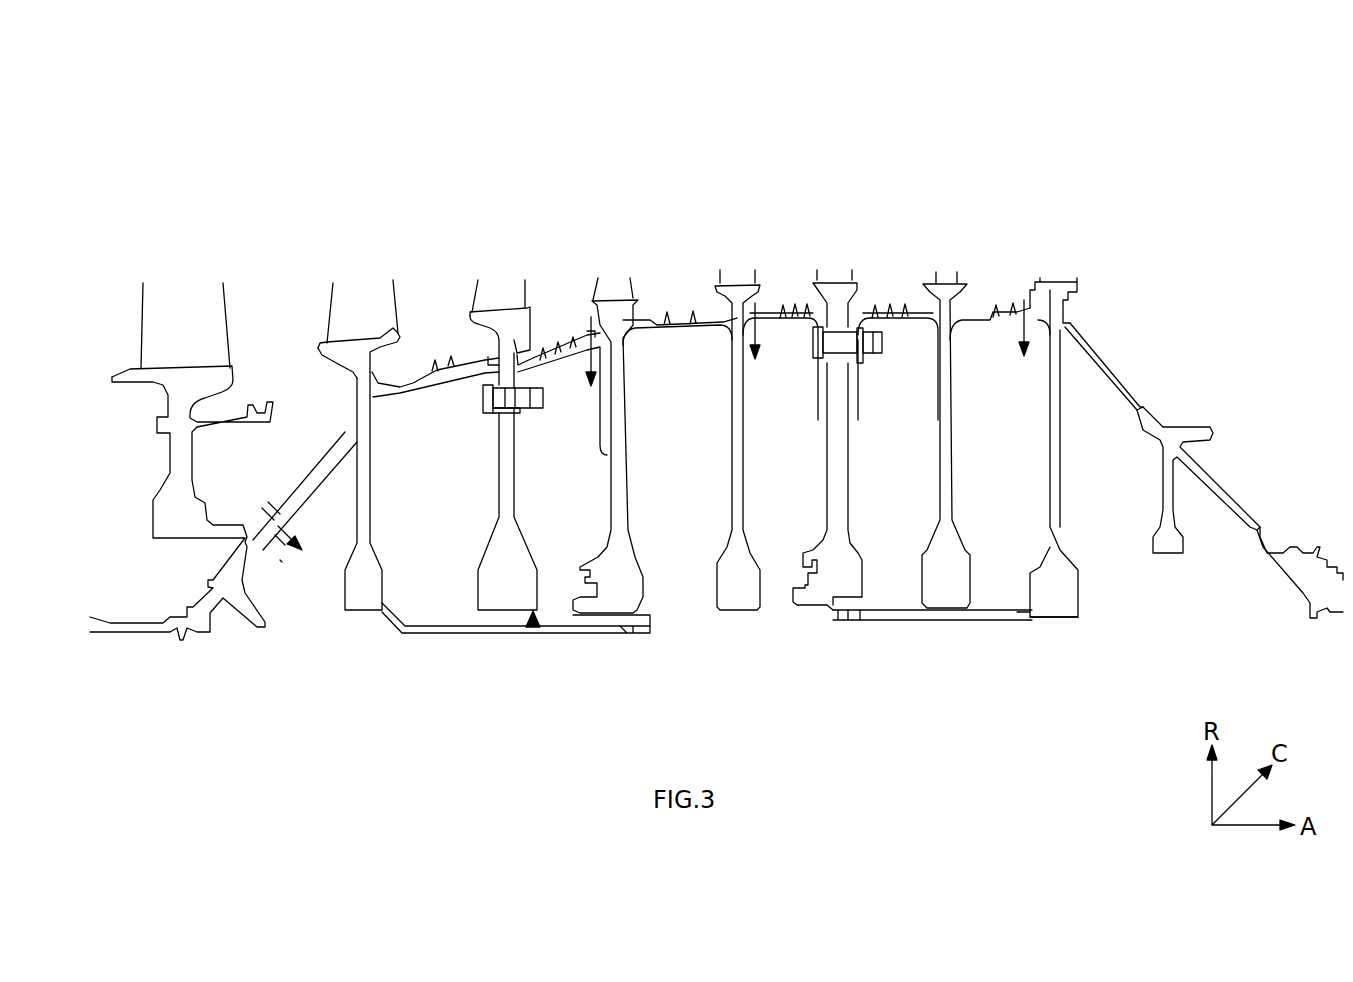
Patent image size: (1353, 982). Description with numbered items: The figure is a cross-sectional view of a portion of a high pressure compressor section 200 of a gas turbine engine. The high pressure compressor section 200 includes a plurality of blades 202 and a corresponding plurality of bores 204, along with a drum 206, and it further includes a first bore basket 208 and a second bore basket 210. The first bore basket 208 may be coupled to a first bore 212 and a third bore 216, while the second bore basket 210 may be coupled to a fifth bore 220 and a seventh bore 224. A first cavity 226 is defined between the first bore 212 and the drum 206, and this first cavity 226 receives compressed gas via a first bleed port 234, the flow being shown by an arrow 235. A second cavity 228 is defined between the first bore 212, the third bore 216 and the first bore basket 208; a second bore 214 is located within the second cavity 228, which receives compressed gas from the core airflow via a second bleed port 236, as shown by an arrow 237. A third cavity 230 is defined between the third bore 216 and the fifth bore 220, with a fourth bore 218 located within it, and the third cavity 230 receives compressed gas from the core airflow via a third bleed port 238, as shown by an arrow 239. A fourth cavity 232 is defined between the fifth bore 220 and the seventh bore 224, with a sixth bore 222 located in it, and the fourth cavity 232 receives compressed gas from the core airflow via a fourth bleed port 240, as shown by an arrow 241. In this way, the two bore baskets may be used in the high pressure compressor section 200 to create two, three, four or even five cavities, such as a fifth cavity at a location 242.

The high pressure compressor section 200 is at (546, 117).
The blades 202 is at (360, 302).
The bores 204 is at (530, 634).
The drum 206 is at (318, 462).
The first bore basket 208 is at (575, 634).
The second bore basket 210 is at (908, 622).
The first bore 212 is at (369, 612).
The second bore 214 is at (477, 558).
The third bore 216 is at (643, 590).
The fourth bore 218 is at (760, 607).
The fifth bore 220 is at (860, 553).
The sixth bore 222 is at (988, 542).
The seventh bore 224 is at (1078, 590).
The first cavity 226 is at (332, 587).
The second cavity 228 is at (575, 474).
The third cavity 230 is at (692, 472).
The fourth cavity 232 is at (908, 474).
The first bleed port 234 is at (282, 545).
The arrow 235 is at (276, 506).
The second bleed port 236 is at (600, 356).
The arrow 237 is at (585, 322).
The third bleed port 238 is at (762, 317).
The arrow 239 is at (762, 330).
The fourth bleed port 240 is at (1023, 305).
The arrow 241 is at (1017, 328).
The location 242 is at (1129, 502).